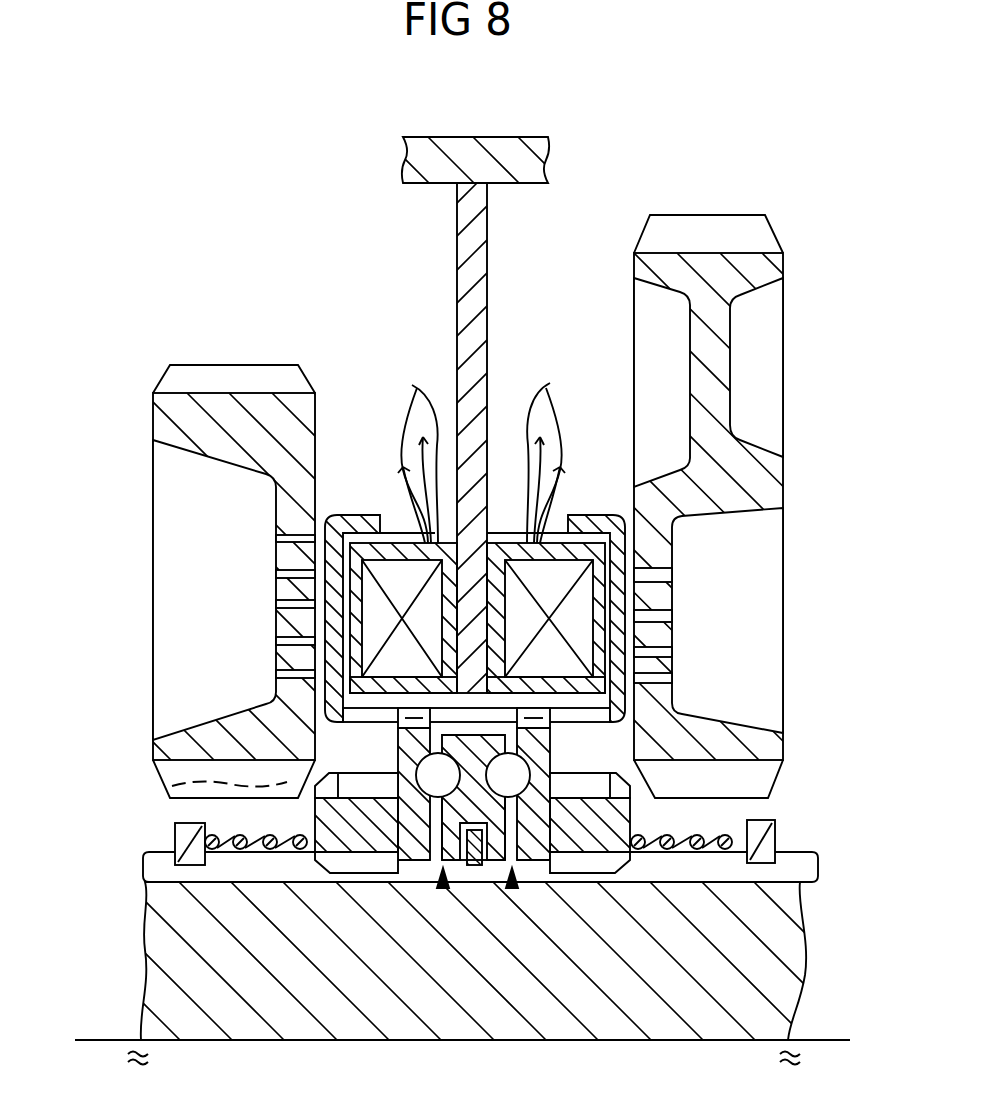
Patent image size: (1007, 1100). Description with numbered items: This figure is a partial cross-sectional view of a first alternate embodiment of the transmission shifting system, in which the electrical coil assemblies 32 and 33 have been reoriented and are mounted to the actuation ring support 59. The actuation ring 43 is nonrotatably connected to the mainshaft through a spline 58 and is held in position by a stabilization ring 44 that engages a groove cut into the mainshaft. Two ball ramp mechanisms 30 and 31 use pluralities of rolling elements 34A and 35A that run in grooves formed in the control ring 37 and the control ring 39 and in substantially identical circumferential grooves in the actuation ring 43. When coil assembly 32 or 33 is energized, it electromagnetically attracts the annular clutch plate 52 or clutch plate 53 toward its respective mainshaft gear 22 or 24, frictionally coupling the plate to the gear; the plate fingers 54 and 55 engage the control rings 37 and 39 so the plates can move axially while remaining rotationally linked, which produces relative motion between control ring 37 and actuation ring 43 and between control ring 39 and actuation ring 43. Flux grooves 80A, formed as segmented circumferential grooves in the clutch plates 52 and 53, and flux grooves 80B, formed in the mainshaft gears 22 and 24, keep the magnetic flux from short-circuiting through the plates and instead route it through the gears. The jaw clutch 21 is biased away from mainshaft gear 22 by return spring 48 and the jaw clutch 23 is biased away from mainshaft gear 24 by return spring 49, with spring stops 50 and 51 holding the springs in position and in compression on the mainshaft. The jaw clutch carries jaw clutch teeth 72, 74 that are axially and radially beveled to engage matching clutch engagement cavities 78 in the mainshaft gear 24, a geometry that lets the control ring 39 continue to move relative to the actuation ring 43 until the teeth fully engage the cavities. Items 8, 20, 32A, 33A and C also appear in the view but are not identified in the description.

The armature plate 8 is at (528, 160).
The base plate 20 is at (805, 863).
The jaw clutch 21 is at (330, 860).
The mainshaft gear 22 is at (190, 415).
The jaw clutch 23 is at (620, 868).
The mainshaft gear 24 is at (757, 313).
The ball ramp mechanism 30 is at (443, 888).
The ball ramp mechanism 31 is at (512, 888).
The electrical coil assembly 32 is at (402, 543).
The left coil lead wires 32A is at (399, 454).
The electrical coil assembly 33 is at (543, 543).
The right coil lead wires 33A is at (566, 454).
The rolling elements 34A is at (447, 880).
The rolling elements 35A is at (532, 875).
The control ring 37 is at (410, 870).
The control ring 39 is at (547, 868).
The actuation ring 43 is at (488, 730).
The stabilization ring 44 is at (456, 868).
The return spring 48 is at (240, 835).
The return spring 49 is at (672, 828).
The spring stop 50 is at (183, 835).
The spring stop 51 is at (763, 833).
The clutch plate 52 is at (338, 517).
The clutch plate 53 is at (617, 517).
The plate fingers 54 is at (355, 688).
The plate fingers 55 is at (600, 688).
The spline 58 is at (473, 882).
The actuation ring support 59 is at (487, 320).
The jaw clutch teeth 72 is at (398, 778).
The jaw clutch teeth 74 is at (320, 787).
The clutch engagement cavities 78 is at (172, 785).
The flux grooves 80A is at (330, 580).
The flux grooves 80B is at (283, 642).
The chassis C is at (807, 1020).